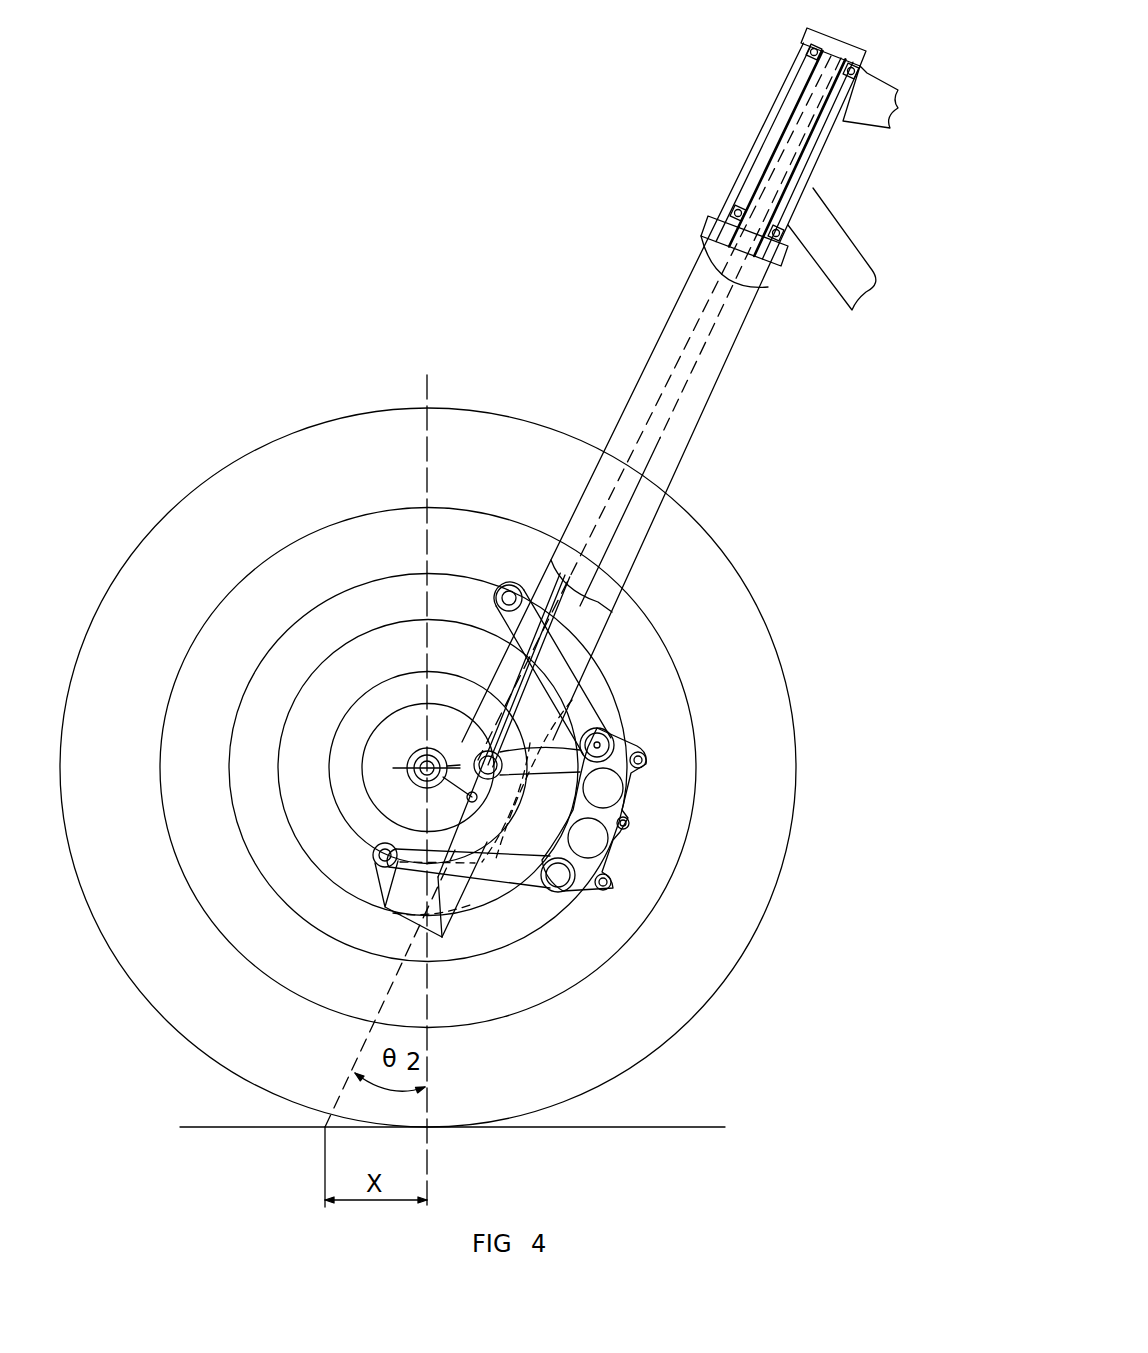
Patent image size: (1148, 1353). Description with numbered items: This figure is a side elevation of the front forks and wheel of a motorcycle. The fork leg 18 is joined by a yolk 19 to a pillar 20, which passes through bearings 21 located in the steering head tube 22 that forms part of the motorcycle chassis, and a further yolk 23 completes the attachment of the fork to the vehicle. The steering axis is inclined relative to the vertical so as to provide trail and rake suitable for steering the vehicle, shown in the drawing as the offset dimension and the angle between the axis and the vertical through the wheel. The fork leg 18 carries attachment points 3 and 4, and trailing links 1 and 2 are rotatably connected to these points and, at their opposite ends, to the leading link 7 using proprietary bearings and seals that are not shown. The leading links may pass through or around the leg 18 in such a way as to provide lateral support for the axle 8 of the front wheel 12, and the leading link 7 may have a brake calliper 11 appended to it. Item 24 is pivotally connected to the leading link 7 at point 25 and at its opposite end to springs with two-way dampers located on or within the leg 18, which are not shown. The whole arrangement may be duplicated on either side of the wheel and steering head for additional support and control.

The trailing link 1 is at (573, 695).
The trailing link 2 is at (493, 868).
The attachment point 3 is at (510, 586).
The attachment point 4 is at (373, 861).
The leading link 7 is at (545, 800).
The axle 8 is at (410, 757).
The brake calliper 11 is at (595, 841).
The front wheel 12 is at (706, 1008).
The fork leg 18 is at (647, 360).
The yolk 19 is at (723, 230).
The pillar 20 is at (799, 172).
The bearings 21 is at (737, 208).
The steering head tube 22 is at (836, 147).
The yolk 23 is at (867, 52).
The item (suspension connecting member) 24 is at (572, 606).
The pivot point 25 is at (567, 772).